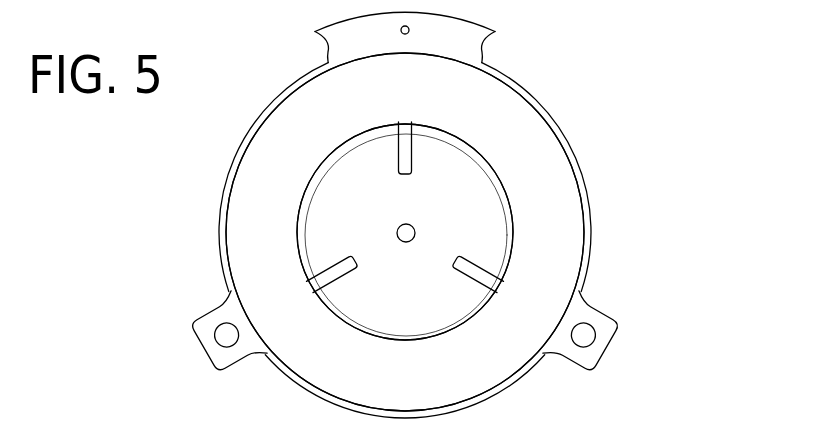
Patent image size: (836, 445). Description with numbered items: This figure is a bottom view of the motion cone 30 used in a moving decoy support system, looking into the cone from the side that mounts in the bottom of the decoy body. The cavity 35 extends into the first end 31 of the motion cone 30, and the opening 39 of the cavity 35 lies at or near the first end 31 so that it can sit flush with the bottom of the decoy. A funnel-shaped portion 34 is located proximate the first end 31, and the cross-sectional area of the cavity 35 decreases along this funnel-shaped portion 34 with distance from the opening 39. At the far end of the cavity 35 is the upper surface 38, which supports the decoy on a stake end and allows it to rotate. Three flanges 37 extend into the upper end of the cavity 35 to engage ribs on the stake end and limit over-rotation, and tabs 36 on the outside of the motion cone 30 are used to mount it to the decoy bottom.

The motion cone 30 is at (673, 66).
The first end 31 is at (585, 168).
The funnel-shaped portion 34 is at (568, 217).
The cavity 35 is at (470, 367).
The tabs 36 is at (314, 33).
The flanges 37 is at (413, 150).
The upper surface 38 is at (372, 214).
The opening 39 is at (222, 225).